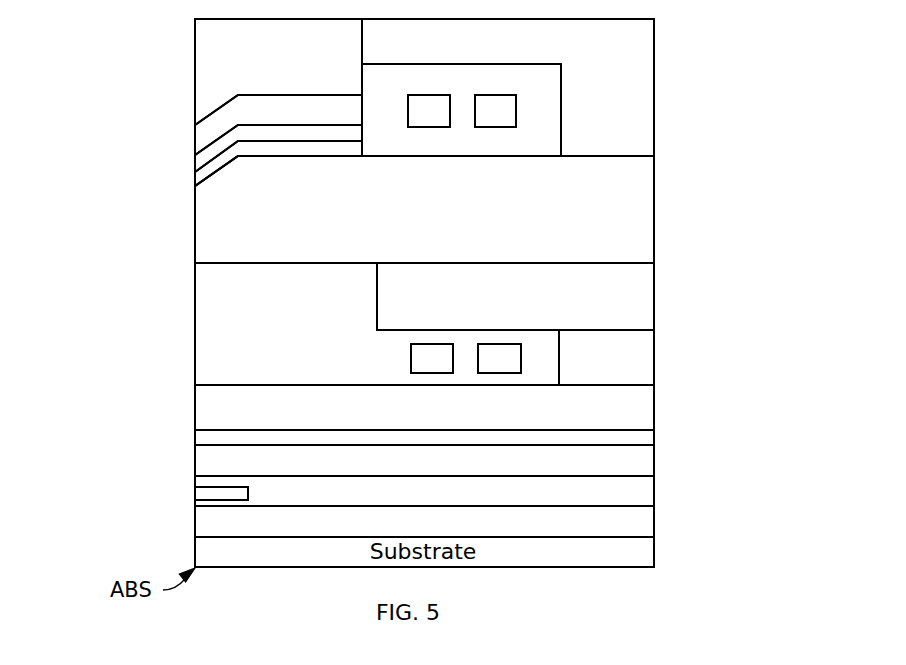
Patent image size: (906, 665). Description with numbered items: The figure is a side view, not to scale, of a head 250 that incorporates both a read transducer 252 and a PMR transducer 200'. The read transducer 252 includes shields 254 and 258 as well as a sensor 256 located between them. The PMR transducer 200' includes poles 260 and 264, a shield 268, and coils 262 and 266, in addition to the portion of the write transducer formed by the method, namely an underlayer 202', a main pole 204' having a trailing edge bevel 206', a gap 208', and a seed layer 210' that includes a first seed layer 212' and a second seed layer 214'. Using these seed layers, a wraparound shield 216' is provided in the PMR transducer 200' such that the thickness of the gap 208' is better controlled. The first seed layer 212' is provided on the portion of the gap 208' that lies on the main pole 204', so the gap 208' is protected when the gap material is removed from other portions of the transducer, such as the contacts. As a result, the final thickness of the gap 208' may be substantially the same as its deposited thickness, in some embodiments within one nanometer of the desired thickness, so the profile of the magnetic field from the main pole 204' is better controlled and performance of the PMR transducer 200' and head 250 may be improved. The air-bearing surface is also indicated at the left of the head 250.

The head 250 is at (77, 45).
The PMR transducer 200' is at (489, 202).
The read transducer 252 is at (745, 519).
The wraparound shield 216' is at (245, 72).
The second seed layer 214' is at (252, 115).
The first seed layer 212' is at (237, 147).
The gap 208' is at (252, 186).
The seed layer 210' is at (60, 139).
The main pole 204' is at (452, 209).
The trailing edge bevel 206' is at (179, 207).
The shield 268 is at (654, 110).
The coils 266 is at (537, 106).
The pole 264 is at (654, 300).
The underlayer 202' is at (390, 324).
The coils 262 is at (546, 362).
The pole 260 is at (654, 413).
The shield 258 is at (195, 467).
The sensor 256 is at (195, 493).
The shield 254 is at (654, 522).